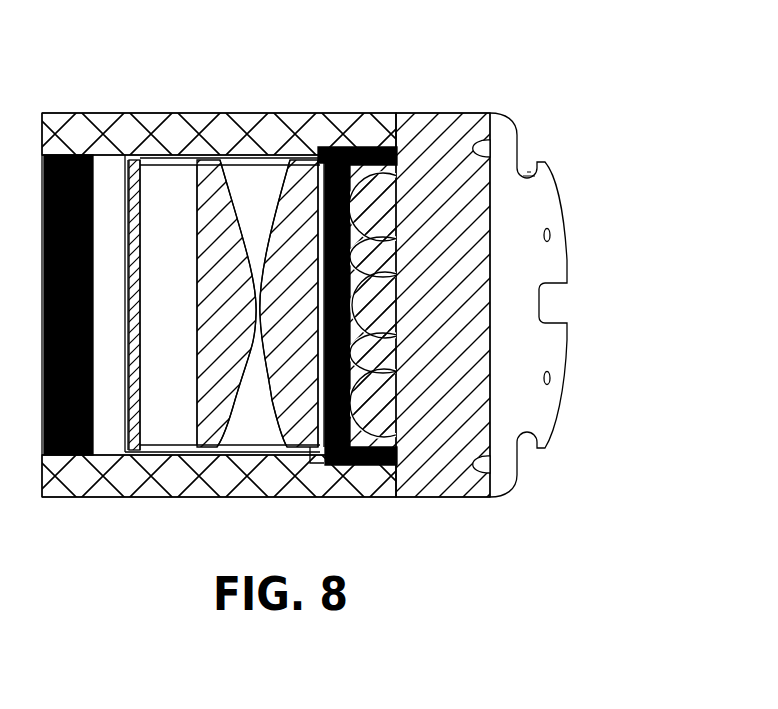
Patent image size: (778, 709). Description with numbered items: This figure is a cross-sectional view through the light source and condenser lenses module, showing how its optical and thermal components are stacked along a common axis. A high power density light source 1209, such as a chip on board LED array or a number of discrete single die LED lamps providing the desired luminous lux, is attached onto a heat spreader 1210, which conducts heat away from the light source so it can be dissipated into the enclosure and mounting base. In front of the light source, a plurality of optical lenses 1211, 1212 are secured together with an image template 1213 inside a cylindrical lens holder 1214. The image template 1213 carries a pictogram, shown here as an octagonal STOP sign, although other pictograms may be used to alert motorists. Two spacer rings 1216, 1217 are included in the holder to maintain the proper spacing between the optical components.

The high power density light source 1209 is at (378, 300).
The heat spreader 1210 is at (457, 127).
The optical lens 1211 is at (292, 397).
The optical lens 1212 is at (212, 405).
The image template 1213 is at (140, 157).
The cylindrical lens holder 1214 is at (338, 130).
The spacer ring 1216 is at (270, 162).
The spacer ring 1217 is at (175, 160).